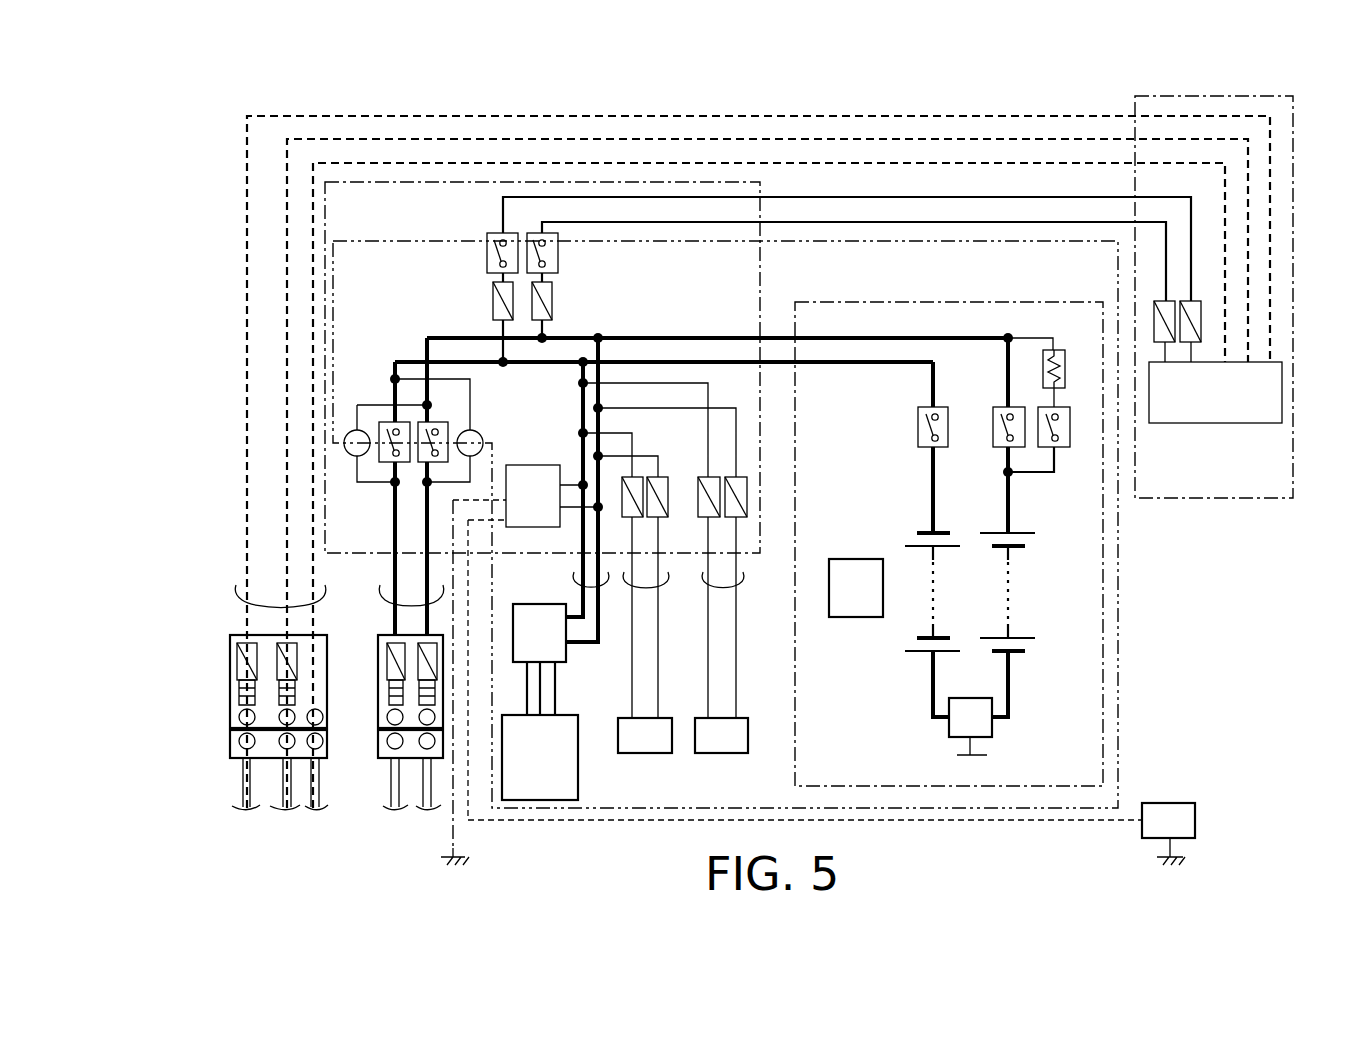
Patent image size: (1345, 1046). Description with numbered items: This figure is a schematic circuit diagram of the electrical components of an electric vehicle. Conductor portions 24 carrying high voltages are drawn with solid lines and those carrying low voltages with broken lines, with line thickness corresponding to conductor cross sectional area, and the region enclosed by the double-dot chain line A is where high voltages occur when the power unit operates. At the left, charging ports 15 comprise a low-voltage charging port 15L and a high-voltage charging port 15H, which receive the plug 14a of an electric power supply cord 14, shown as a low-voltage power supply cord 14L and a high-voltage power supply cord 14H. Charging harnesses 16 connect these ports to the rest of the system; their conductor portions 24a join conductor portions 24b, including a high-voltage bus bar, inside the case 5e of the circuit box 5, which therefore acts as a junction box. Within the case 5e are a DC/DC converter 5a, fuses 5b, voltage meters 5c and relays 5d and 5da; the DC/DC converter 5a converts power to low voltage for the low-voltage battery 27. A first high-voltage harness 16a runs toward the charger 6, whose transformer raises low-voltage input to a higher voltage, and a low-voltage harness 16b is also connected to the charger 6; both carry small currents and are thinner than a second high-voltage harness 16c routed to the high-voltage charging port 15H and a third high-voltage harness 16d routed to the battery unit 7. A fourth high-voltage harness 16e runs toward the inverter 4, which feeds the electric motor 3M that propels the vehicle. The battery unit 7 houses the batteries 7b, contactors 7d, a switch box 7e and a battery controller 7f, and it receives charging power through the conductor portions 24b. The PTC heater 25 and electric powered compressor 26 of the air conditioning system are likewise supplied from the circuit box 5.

The circuit box 5 is at (542, 310).
The case 5e is at (390, 181).
The DC/DC converter 5a is at (549, 465).
The fuses 5b is at (493, 298).
The voltage meters 5c is at (352, 460).
The relays 5d is at (383, 424).
The relays 5da is at (487, 258).
The conductor portions 24 is at (691, 429).
The conductor portions 24a is at (750, 163).
The conductor portions 24b is at (695, 361).
The charging harnesses 16 is at (650, 588).
The first high-voltage harness 16a is at (1043, 222).
The low-voltage harness 16b is at (873, 177).
The second high-voltage harness 16c is at (381, 600).
The third high-voltage harness 16d is at (782, 372).
The fourth high-voltage harness 16e is at (598, 590).
The battery unit 7 is at (978, 300).
The batteries 7b is at (950, 632).
The contactors 7d is at (990, 408).
The switch box 7e is at (949, 730).
The battery controller 7f is at (855, 617).
The charger 6 is at (1203, 498).
The double-dot chain line A is at (1118, 625).
The electric power supply cord 14 is at (323, 589).
The low-voltage power supply cord 14L is at (229, 795).
The high-voltage power supply cord 14H is at (386, 800).
The plug 14a is at (229, 745).
The charging ports 15 is at (135, 660).
The low-voltage charging port 15L is at (229, 665).
The high-voltage charging port 15H is at (229, 702).
The inverter 4 is at (566, 655).
The electric motor 3M is at (560, 800).
The PTC heater 25 is at (656, 753).
The electric powered compressor 26 is at (741, 718).
The low-voltage battery 27 is at (1178, 803).